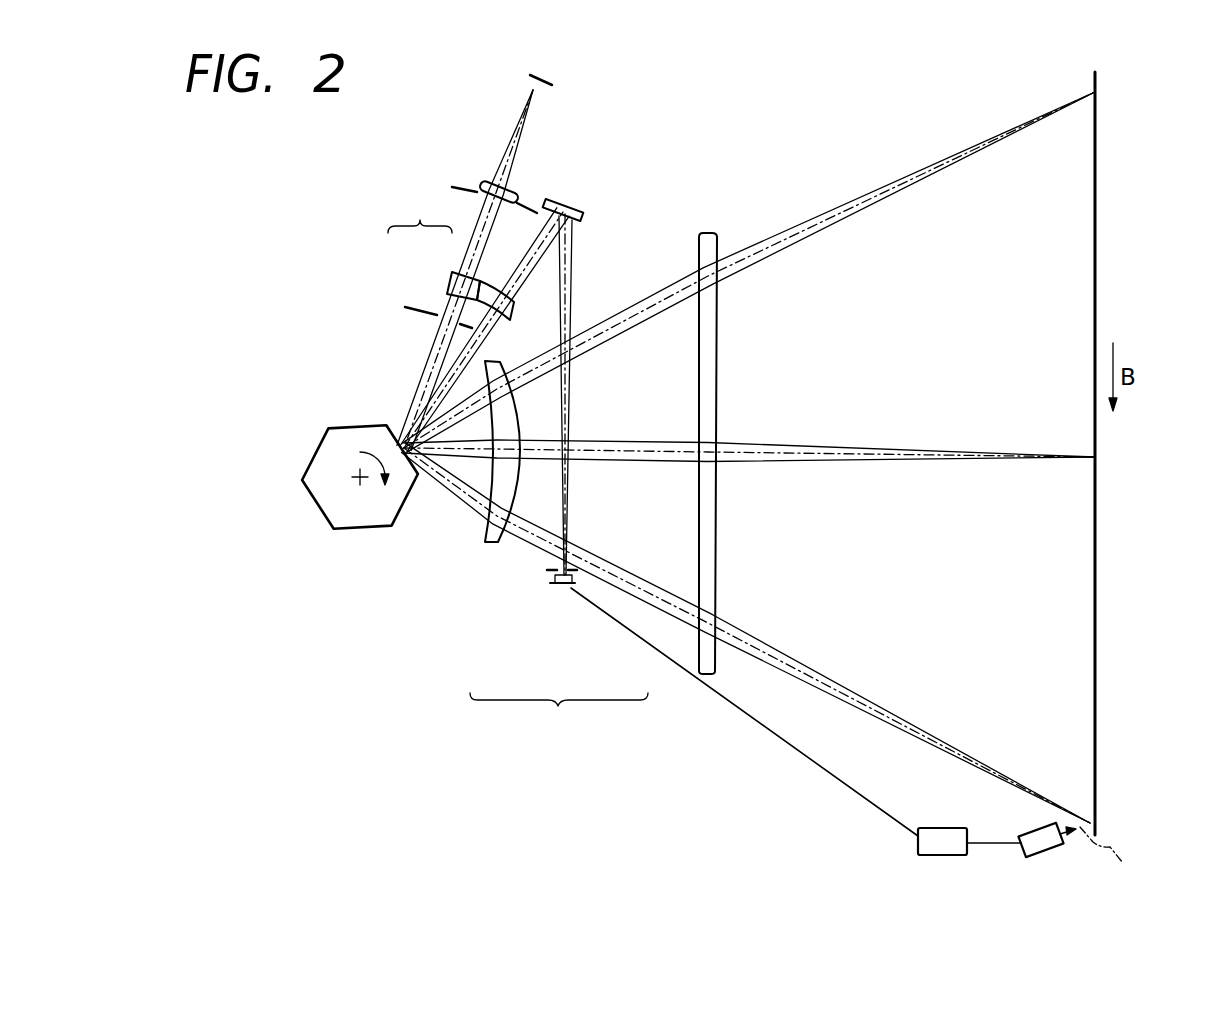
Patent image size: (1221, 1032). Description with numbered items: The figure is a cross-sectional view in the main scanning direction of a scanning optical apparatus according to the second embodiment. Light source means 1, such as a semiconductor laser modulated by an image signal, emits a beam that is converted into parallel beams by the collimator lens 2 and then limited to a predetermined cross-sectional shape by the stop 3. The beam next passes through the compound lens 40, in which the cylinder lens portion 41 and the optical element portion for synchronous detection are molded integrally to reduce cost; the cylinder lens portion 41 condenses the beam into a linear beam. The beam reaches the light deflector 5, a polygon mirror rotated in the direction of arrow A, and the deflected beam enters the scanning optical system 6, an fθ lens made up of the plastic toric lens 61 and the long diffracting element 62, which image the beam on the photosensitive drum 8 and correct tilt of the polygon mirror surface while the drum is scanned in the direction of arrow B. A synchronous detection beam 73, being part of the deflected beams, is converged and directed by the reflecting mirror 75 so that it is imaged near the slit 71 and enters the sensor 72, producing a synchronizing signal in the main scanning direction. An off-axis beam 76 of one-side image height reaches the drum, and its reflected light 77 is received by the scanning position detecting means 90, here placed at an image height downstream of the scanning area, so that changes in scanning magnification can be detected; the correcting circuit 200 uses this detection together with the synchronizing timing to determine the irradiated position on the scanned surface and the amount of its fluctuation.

The light source means 1 is at (548, 82).
The collimator lens 2 is at (487, 183).
The stop 3 is at (410, 305).
The compound lens 40 is at (448, 257).
The cylinder lens portion 41 is at (452, 280).
The light deflector 5 is at (377, 523).
The scanning optical system 6 is at (593, 486).
The plastic toric lens 61 is at (488, 545).
The long diffracting element 62 is at (700, 655).
The slit for synchronous detection 71 is at (552, 570).
The sensor for synchronous detection 72 is at (555, 584).
The synchronous detection beam 73 is at (500, 346).
The reflecting mirror 75 is at (578, 207).
The off-axis beam 76 is at (942, 742).
The reflected light 77 is at (1111, 861).
The photosensitive drum 8 is at (1095, 552).
The scanning position detecting means 90 is at (1030, 830).
The correcting circuit 200 is at (930, 826).